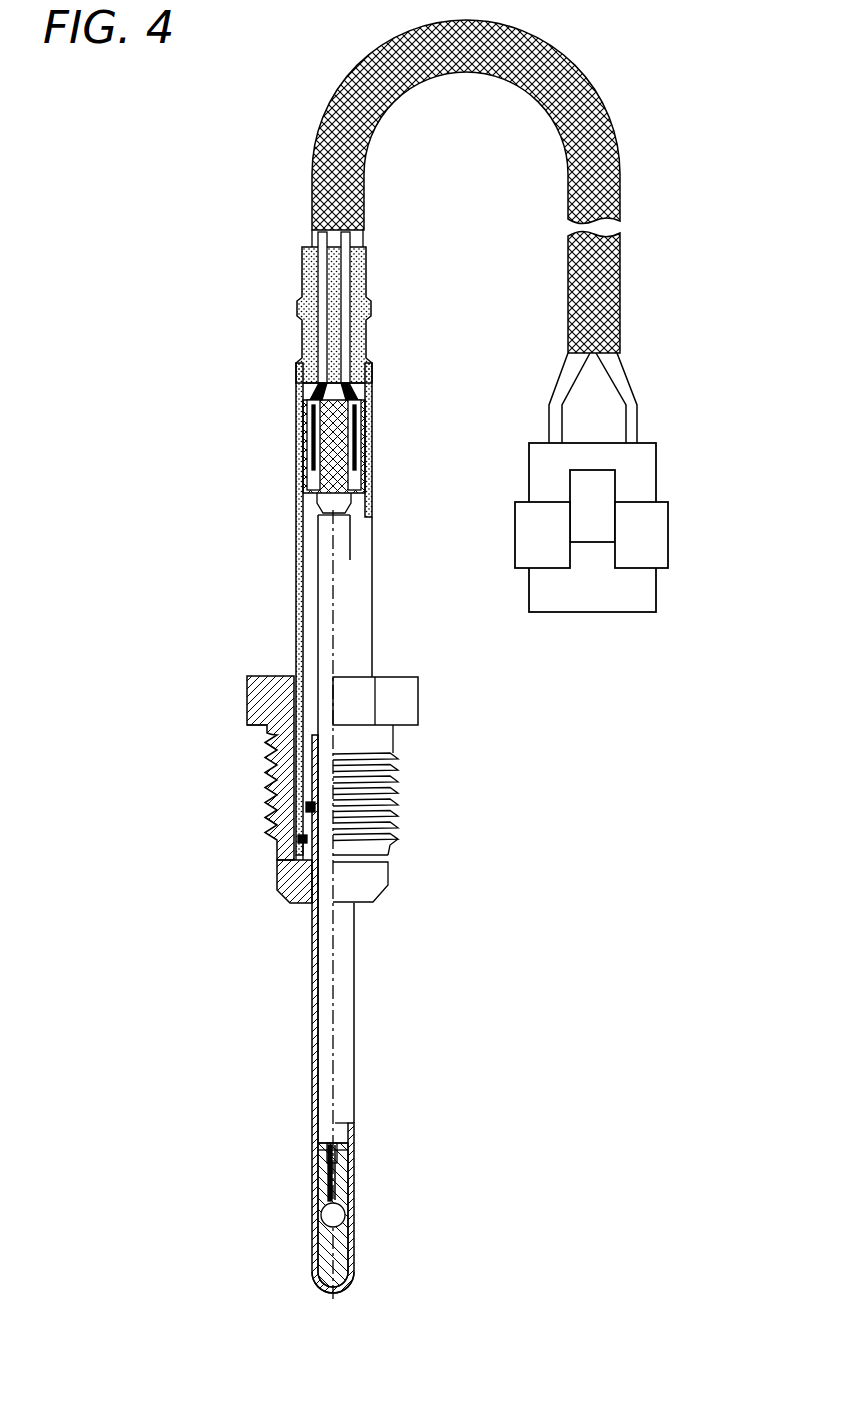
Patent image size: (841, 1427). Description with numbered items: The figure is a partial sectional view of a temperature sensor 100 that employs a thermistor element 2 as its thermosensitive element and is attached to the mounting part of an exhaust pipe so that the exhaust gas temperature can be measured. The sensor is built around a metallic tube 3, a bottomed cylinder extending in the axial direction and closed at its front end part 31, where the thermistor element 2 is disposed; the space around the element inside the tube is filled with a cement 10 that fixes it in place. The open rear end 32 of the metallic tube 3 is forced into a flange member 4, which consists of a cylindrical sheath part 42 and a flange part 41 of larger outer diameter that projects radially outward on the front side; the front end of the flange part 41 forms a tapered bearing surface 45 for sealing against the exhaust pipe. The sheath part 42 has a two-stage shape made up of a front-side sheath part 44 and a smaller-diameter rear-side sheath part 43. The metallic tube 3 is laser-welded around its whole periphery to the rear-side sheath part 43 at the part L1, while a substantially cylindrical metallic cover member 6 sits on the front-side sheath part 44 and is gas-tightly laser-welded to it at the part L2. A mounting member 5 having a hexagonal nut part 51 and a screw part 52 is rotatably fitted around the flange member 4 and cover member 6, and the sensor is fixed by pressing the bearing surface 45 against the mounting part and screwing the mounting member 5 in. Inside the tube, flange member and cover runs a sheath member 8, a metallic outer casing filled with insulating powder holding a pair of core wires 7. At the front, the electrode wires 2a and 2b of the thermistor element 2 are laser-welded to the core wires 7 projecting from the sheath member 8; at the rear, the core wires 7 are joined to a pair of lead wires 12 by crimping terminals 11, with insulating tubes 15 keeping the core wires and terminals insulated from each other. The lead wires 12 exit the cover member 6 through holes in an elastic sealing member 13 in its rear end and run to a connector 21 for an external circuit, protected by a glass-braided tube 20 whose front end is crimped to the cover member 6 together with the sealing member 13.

The temperature sensor 100 is at (258, 190).
The glass-braided tube 20 is at (363, 200).
The elastic sealing member 13 is at (372, 300).
The lead wires 12 is at (348, 367).
The metallic cover member 6 is at (297, 548).
The crimping terminals 11 is at (358, 425).
The insulating tubes 15 is at (305, 466).
The core wires 7 is at (352, 517).
The sheath member 8 is at (322, 1062).
The rear end 32 is at (275, 738).
The flange member 4 is at (155, 780).
The cylindrical sheath part 42 is at (193, 772).
The rear-side sheath part 43 is at (300, 792).
The front-side sheath part 44 is at (292, 822).
The flange part 41 is at (278, 862).
The bearing surface 45 is at (286, 897).
The laser-welded part L1 is at (315, 806).
The laser-welded part L2 is at (307, 839).
The mounting member 5 is at (434, 766).
The hexagonal nut part 51 is at (405, 702).
The screw part 52 is at (393, 750).
The metallic tube 3 is at (315, 1101).
The cement 10 is at (345, 1258).
The thermistor element 2 is at (331, 1188).
The electrode wire 2a is at (340, 1175).
The electrode wire 2b is at (327, 1187).
The front end part 31 is at (312, 1278).
The connector 21 is at (640, 475).